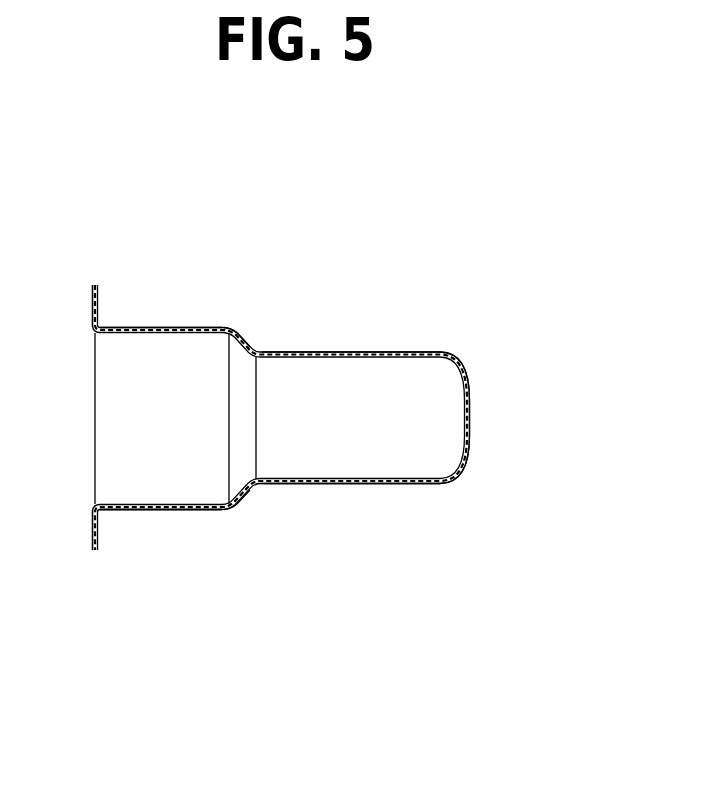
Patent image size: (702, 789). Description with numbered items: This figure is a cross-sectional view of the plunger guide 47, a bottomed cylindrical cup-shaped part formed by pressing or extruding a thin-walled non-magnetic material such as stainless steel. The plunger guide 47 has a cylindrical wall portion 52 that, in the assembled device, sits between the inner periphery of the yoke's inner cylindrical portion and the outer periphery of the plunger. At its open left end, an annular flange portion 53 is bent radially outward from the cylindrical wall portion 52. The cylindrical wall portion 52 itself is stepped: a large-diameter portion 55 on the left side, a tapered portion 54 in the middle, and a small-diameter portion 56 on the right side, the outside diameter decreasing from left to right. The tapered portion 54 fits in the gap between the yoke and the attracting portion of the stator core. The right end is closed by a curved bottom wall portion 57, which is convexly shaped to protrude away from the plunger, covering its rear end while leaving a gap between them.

The cylindrical wall portion 52 is at (430, 226).
The annular flange portion 53 is at (95, 288).
The tapered portion 54 is at (249, 342).
The large-diameter portion 55 is at (206, 326).
The small-diameter portion 56 is at (388, 350).
The curved bottom wall portion 57 is at (469, 418).
The plunger guide 47 is at (224, 513).